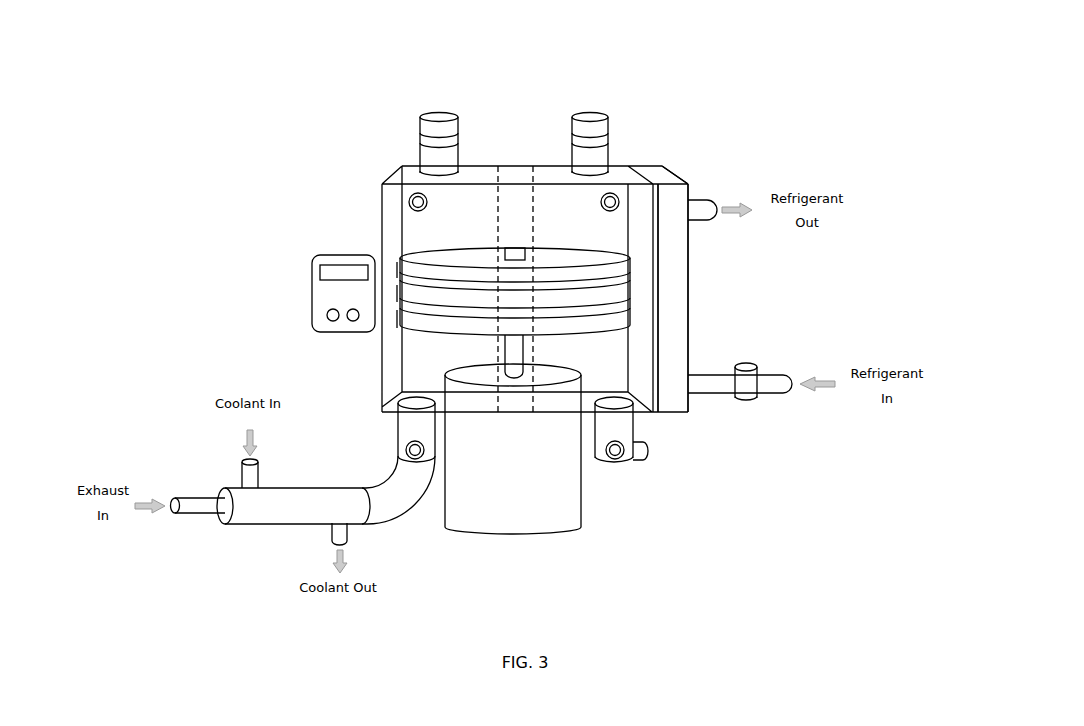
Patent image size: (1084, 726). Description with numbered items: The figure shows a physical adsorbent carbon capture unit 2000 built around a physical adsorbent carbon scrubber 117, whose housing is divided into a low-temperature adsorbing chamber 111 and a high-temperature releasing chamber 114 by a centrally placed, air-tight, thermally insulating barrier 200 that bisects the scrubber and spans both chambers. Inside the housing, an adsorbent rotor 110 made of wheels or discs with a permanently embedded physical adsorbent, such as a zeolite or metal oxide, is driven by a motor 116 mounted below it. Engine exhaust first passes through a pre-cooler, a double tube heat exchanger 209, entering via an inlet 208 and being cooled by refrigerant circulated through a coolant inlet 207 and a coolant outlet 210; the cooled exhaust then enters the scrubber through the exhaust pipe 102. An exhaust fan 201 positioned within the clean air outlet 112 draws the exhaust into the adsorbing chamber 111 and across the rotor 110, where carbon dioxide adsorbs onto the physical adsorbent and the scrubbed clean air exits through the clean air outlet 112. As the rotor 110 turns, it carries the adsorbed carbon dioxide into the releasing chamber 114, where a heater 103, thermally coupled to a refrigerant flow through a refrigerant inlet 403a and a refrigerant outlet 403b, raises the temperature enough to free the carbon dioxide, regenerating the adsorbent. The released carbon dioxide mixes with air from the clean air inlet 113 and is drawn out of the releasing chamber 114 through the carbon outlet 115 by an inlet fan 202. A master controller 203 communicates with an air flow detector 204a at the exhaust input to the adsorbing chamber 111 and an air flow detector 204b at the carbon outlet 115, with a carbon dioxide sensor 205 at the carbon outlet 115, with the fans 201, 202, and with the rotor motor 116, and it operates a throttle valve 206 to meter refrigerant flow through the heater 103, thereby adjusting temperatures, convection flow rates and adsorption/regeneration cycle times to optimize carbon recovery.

The physical adsorbent carbon capture unit 2000 is at (118, 168).
The barrier 200 is at (520, 170).
The exhaust pipe 102 is at (408, 428).
The heater 103 is at (678, 288).
The adsorbent rotor 110 is at (590, 327).
The low-temperature adsorbing chamber 111 is at (434, 288).
The clean air outlet 112 is at (418, 117).
The clean air inlet 113 is at (608, 117).
The high-temperature releasing chamber 114 is at (596, 288).
The carbon outlet 115 is at (634, 430).
The motor 116 is at (513, 449).
The physical adsorbent carbon scrubber 117 is at (380, 225).
The exhaust fan 201 is at (422, 140).
The inlet fan 202 is at (608, 140).
The master controller 203 is at (320, 297).
The air flow detector 204a is at (404, 448).
The air flow detector 204b is at (617, 460).
The CO2 sensor 205 is at (652, 452).
The throttle valve 206 is at (749, 365).
The coolant inlet 207 is at (240, 460).
The inlet 208 is at (184, 497).
The double tube heat exchanger 209 is at (280, 515).
The coolant outlet 210 is at (344, 533).
The refrigerant inlet 403a is at (713, 395).
The refrigerant outlet 403b is at (698, 200).